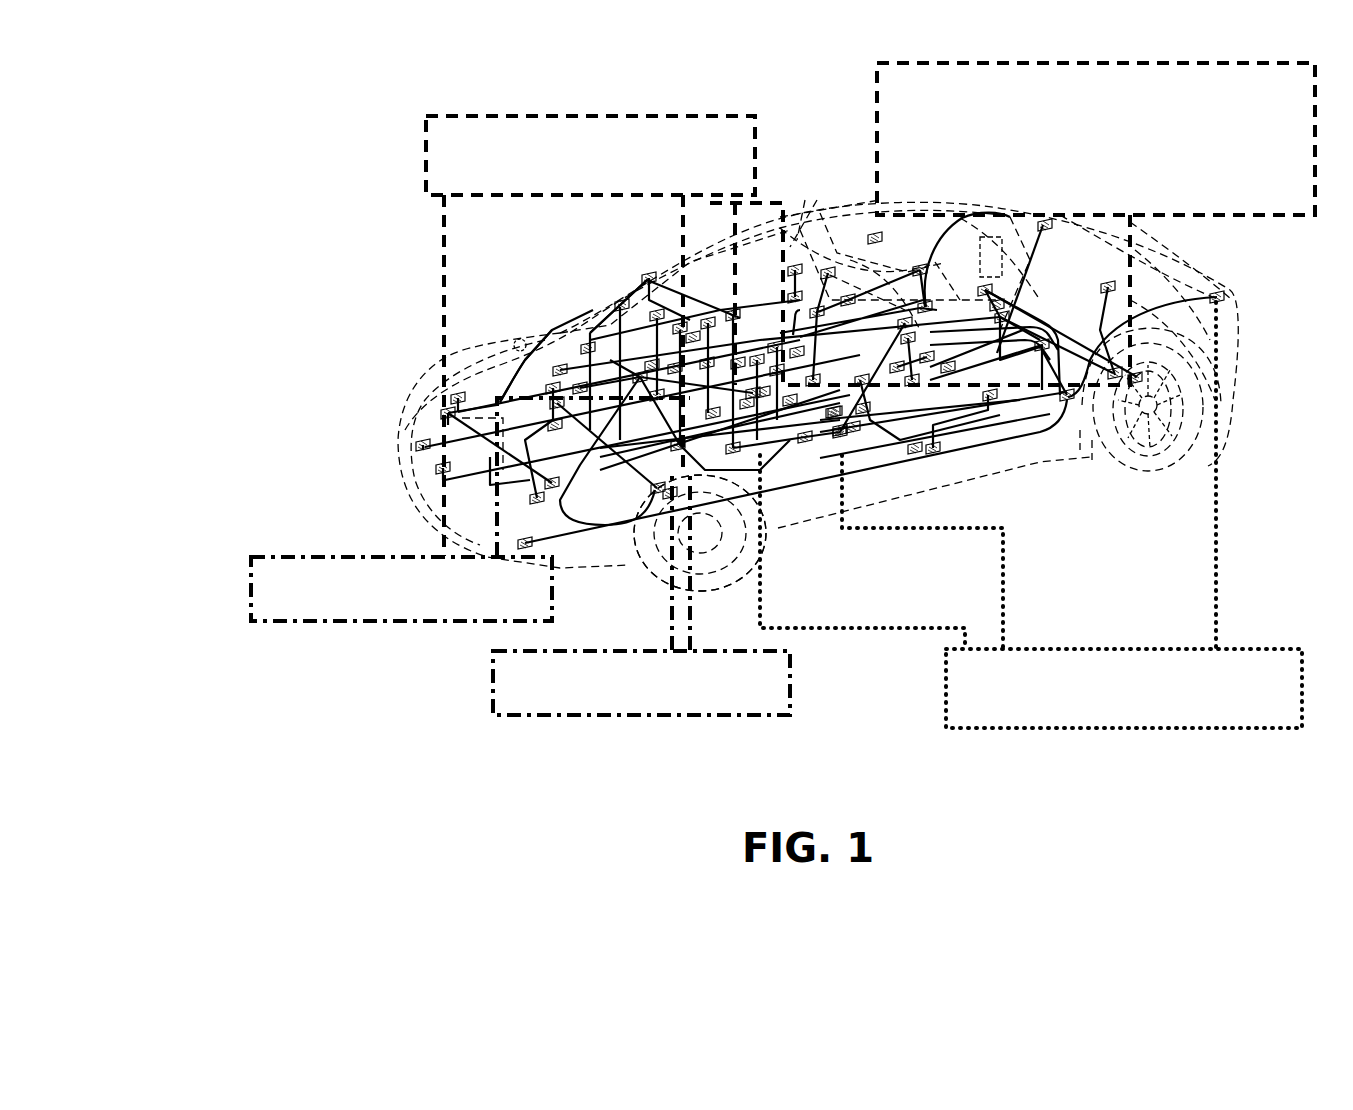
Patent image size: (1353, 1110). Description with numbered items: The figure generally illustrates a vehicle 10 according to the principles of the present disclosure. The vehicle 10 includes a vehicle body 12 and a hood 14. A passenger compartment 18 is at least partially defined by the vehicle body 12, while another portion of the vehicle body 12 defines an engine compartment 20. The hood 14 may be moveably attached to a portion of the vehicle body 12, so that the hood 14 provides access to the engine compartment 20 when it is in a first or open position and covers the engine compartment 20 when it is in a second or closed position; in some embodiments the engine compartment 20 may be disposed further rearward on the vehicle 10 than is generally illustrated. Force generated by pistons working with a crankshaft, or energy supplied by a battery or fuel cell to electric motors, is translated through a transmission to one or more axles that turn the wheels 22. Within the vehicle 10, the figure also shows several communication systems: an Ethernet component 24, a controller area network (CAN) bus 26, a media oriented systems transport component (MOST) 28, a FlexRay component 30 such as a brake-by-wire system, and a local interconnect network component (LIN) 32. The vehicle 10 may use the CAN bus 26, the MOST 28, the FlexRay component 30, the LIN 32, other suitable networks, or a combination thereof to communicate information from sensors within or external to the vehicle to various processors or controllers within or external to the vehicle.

The vehicle 10 is at (222, 203).
The vehicle body 12 is at (790, 322).
The hood 14 is at (540, 338).
The passenger compartment 18 is at (705, 283).
The engine compartment 20 is at (378, 402).
The wheels 22 is at (648, 556).
The Ethernet component 24 is at (232, 588).
The controller area network (CAN) bus 26 is at (412, 148).
The media oriented systems transport component (MOST) 28 is at (860, 130).
The FlexRay component 30 is at (468, 680).
The local interconnect network component (LIN) 32 is at (930, 680).